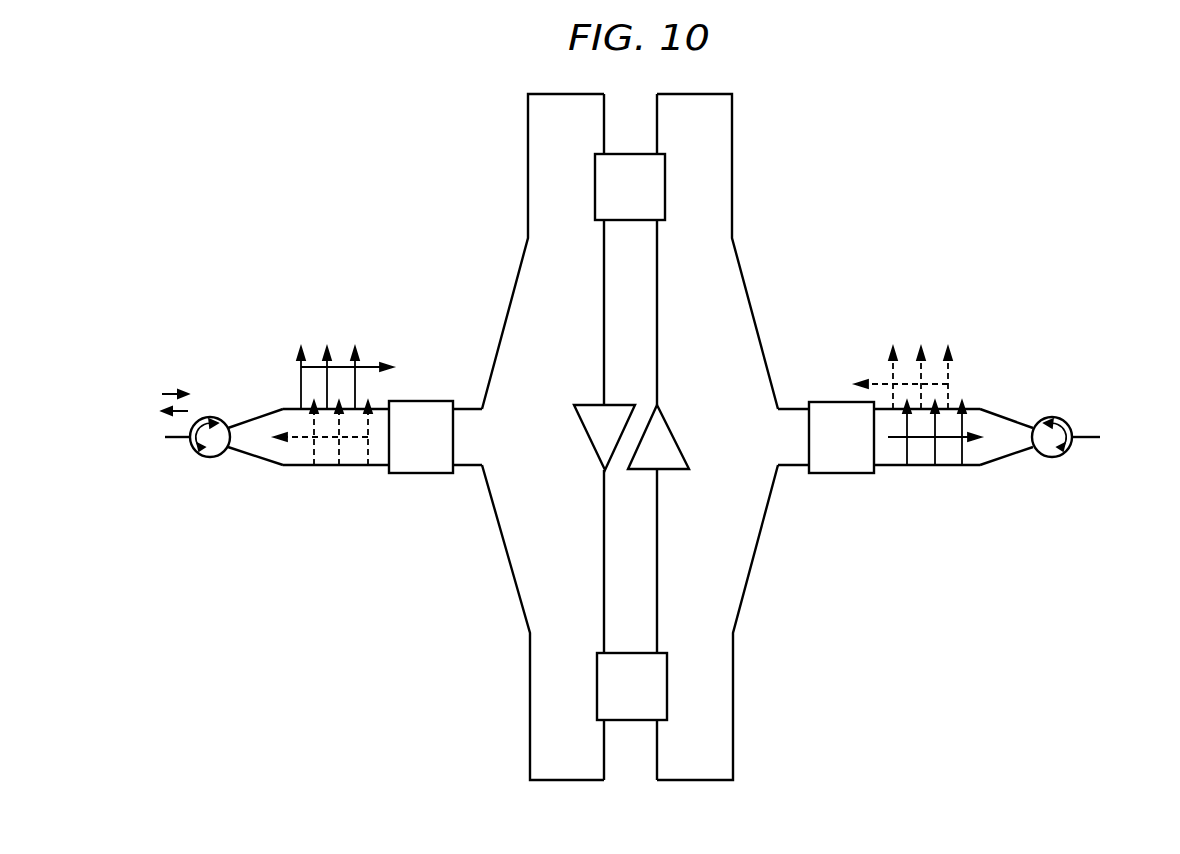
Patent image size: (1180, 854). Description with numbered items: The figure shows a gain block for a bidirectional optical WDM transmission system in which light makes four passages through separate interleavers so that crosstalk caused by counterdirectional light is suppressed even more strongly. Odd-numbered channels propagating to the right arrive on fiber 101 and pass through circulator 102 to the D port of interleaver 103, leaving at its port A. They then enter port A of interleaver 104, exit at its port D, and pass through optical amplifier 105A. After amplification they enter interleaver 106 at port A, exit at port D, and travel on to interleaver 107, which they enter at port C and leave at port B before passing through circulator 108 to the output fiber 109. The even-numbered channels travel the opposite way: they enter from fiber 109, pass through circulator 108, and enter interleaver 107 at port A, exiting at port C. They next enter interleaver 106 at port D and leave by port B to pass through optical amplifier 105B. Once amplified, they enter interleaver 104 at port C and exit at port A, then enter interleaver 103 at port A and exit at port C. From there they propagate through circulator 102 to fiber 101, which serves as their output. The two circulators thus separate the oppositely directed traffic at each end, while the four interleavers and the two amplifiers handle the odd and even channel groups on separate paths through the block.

The fiber 101 is at (173, 437).
The circulator 102 is at (212, 458).
The interleaver 103 is at (427, 401).
The interleaver 104 is at (665, 186).
The optical amplifier 105A is at (587, 440).
The optical amplifier 105B is at (680, 428).
The interleaver 106 is at (667, 686).
The interleaver 107 is at (837, 473).
The circulator 108 is at (1055, 458).
The output fiber 109 is at (1092, 437).